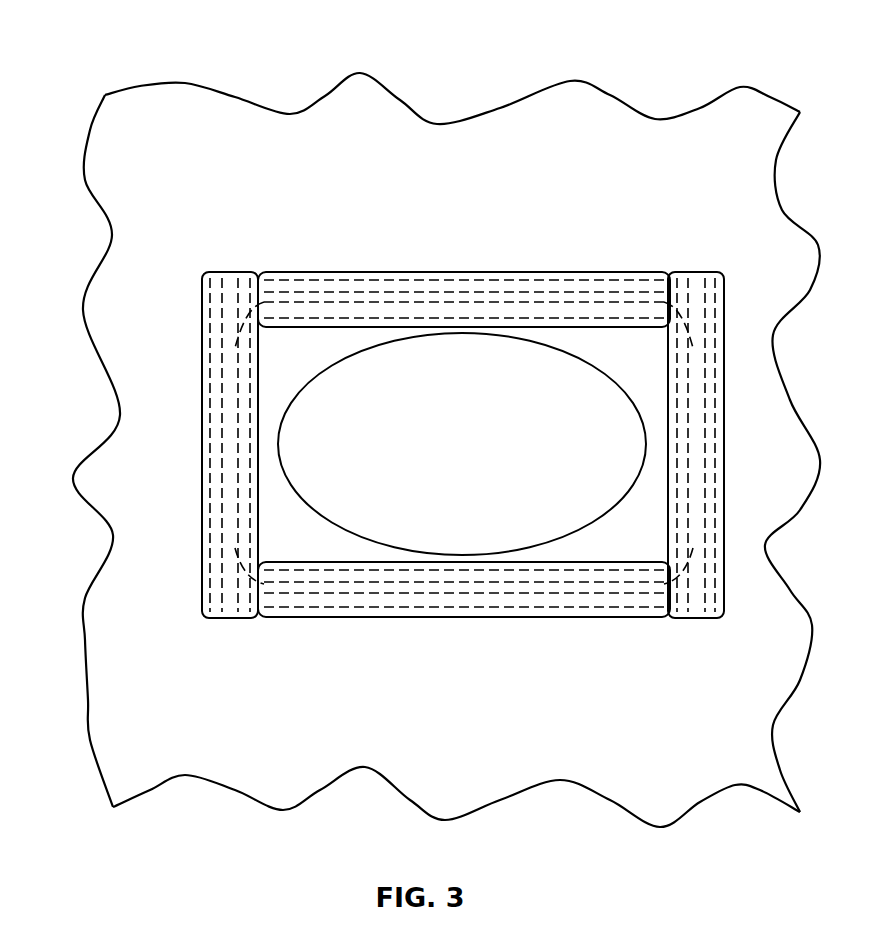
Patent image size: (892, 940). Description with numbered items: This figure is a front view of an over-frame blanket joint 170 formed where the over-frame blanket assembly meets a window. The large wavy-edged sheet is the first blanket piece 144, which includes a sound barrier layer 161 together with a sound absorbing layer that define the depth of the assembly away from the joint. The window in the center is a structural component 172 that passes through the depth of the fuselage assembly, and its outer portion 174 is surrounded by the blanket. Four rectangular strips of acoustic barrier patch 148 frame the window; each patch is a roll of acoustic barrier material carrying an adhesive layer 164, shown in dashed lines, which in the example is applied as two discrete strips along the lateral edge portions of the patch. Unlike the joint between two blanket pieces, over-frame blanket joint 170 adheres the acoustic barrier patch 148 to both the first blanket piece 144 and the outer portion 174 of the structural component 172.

The over-frame blanket joint 170 is at (213, 45).
The first blanket piece 144 is at (420, 440).
The sound barrier layer 161 is at (98, 160).
The acoustic barrier patch 148 is at (440, 272).
The adhesive layer 164 is at (247, 272).
The structural component 172 is at (342, 525).
The outer portion 174 is at (681, 316).